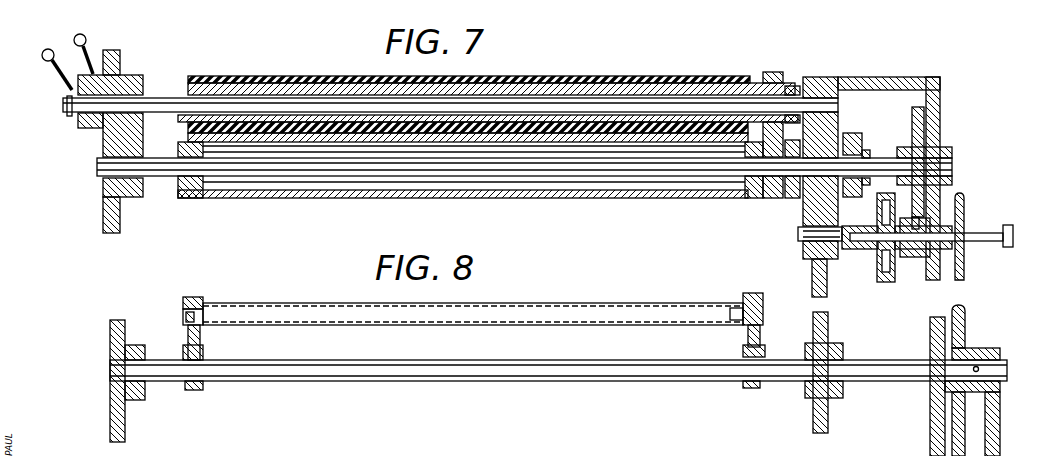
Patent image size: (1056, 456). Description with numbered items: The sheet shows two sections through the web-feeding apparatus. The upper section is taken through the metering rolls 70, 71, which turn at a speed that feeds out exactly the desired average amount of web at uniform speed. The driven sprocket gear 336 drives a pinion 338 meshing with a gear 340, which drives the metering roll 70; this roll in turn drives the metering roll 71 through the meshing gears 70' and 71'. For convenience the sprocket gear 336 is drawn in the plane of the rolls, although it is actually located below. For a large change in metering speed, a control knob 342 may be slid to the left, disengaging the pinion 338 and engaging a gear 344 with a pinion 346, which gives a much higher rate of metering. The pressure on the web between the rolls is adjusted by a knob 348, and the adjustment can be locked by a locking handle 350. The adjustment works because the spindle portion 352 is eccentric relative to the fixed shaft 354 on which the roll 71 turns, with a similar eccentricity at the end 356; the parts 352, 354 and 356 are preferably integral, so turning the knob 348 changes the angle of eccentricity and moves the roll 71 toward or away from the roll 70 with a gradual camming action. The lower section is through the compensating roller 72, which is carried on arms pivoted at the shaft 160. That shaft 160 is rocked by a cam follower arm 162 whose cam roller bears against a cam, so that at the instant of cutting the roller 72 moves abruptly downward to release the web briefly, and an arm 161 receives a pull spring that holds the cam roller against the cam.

In FIG. 7, the metering roll 70 is at (470, 184).
In FIG. 7, the gear 70' is at (779, 156).
In FIG. 7, the metering roll 71 is at (488, 99).
In FIG. 7, the gear 71' is at (788, 65).
In FIG. 8, the compensating roller 72 is at (565, 304).
In FIG. 8, the shaft 160 is at (608, 368).
In FIG. 8, the arm 161 is at (966, 333).
In FIG. 8, the cam follower arm 162 is at (1001, 413).
In FIG. 7, the driven sprocket gear 336 is at (962, 197).
In FIG. 7, the pinion 338 is at (918, 258).
In FIG. 7, the gear 340 is at (920, 106).
In FIG. 7, the control knob 342 is at (1006, 250).
In FIG. 7, the gear 344 is at (882, 283).
In FIG. 7, the pinion 346 is at (853, 133).
In FIG. 7, the knob 348 is at (42, 60).
In FIG. 7, the locking handle 350 is at (87, 40).
In FIG. 7, the spindle portion 352 is at (124, 100).
In FIG. 7, the fixed shaft 354 is at (162, 103).
In FIG. 7, the end 356 is at (813, 100).